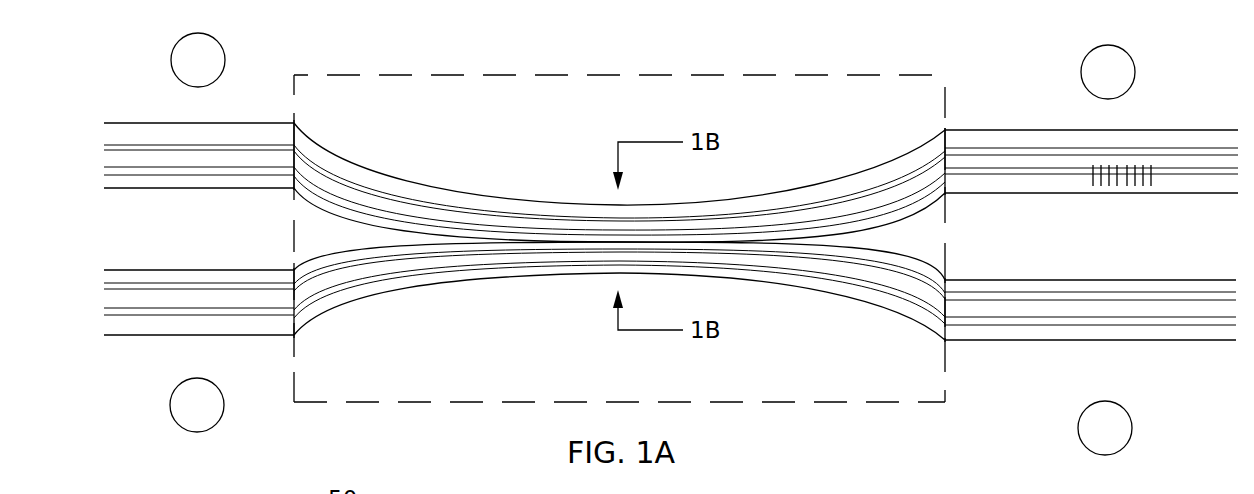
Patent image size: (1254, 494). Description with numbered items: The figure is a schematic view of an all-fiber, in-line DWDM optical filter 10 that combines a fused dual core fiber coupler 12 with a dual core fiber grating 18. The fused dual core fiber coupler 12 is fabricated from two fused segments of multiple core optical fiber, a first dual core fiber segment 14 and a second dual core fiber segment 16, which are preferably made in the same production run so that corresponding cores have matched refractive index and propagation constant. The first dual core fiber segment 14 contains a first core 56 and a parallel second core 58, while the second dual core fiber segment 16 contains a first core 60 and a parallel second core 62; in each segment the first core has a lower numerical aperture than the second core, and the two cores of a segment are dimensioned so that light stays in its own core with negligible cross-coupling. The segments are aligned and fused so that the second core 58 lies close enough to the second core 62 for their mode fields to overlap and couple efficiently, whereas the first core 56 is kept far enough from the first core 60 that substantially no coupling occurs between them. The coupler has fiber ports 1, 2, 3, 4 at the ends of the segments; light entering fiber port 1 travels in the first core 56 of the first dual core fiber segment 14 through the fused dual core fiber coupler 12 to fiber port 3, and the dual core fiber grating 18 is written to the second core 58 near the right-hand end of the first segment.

The fiber port 1 is at (198, 60).
The fiber port 2 is at (197, 405).
The fiber port 3 is at (1108, 72).
The fiber port 4 is at (1105, 428).
The in-line DWDM optical filter 10 is at (684, 50).
The fused dual core fiber coupler 12 is at (631, 379).
The first dual core fiber segment 14 is at (168, 123).
The second dual core fiber segment 16 is at (172, 336).
The dual core fiber grating 18 is at (1122, 173).
The first core 56 is at (960, 143).
The second core 58 is at (960, 177).
The first core 60 is at (1058, 325).
The second core 62 is at (1057, 294).